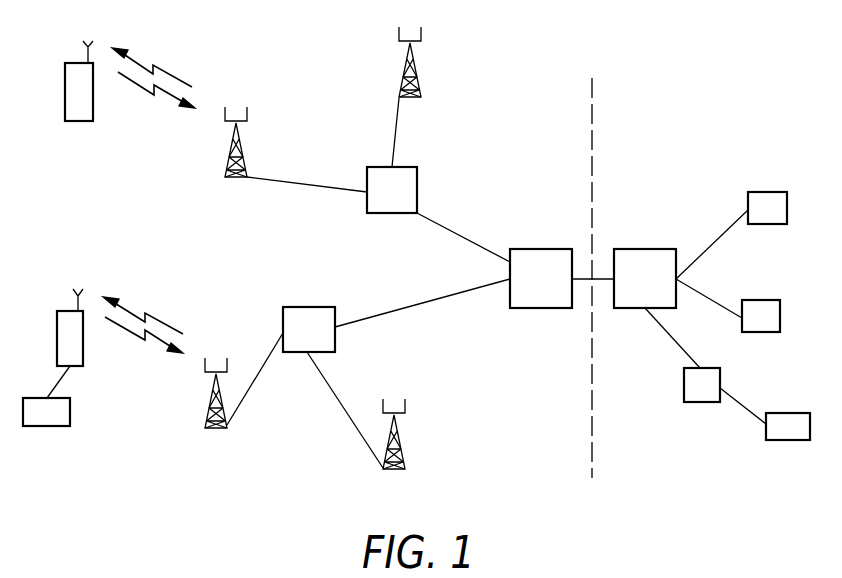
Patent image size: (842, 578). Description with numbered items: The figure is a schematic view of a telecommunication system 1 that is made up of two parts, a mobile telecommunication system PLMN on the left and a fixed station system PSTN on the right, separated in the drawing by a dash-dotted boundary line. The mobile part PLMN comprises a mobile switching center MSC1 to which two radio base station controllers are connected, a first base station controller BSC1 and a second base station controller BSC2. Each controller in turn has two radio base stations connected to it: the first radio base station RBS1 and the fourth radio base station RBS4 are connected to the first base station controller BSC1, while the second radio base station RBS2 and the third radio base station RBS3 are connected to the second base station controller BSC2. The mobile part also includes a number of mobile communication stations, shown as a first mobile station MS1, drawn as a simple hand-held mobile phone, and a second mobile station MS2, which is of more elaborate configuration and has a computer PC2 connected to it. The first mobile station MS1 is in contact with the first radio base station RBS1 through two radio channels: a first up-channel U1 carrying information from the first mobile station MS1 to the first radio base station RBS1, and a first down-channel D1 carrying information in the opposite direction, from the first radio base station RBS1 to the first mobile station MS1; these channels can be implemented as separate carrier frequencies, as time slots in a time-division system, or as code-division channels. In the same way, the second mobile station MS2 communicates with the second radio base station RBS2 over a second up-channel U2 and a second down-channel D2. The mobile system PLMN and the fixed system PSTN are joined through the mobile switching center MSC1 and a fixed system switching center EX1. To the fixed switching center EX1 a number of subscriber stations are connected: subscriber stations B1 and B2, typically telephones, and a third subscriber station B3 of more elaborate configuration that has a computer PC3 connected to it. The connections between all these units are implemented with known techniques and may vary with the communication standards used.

The telecommunication system 1 is at (601, 64).
The mobile telecommunication system PLMN is at (568, 163).
The fixed station system PSTN is at (672, 163).
The first mobile station MS1 is at (93, 121).
The second mobile station MS2 is at (83, 366).
The first mobile station down-channel D1 is at (171, 73).
The second down-channel D2 is at (163, 322).
The first mobile station up-channel U1 is at (137, 85).
The second up-channel U2 is at (132, 337).
The first radio base station RBS1 is at (236, 177).
The second radio base station RBS2 is at (216, 428).
The third radio base station RBS3 is at (394, 469).
The fourth radio base station RBS4 is at (418, 72).
The first base station controller BSC1 is at (392, 213).
The second base station controller BSC2 is at (305, 307).
The mobile switching center MSC1 is at (540, 249).
The fixed system switching center EX1 is at (644, 249).
The subscriber station B1 is at (768, 224).
The subscriber station B2 is at (760, 332).
The subscriber station B3 is at (700, 402).
The computer PC2 is at (45, 426).
The computer PC3 is at (790, 440).